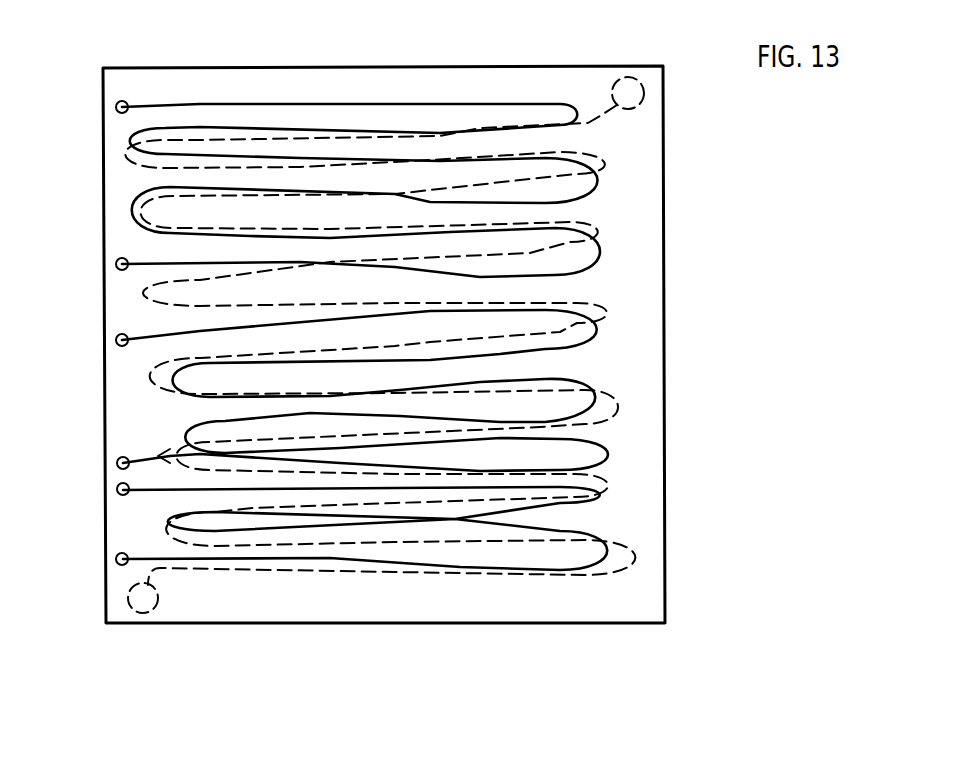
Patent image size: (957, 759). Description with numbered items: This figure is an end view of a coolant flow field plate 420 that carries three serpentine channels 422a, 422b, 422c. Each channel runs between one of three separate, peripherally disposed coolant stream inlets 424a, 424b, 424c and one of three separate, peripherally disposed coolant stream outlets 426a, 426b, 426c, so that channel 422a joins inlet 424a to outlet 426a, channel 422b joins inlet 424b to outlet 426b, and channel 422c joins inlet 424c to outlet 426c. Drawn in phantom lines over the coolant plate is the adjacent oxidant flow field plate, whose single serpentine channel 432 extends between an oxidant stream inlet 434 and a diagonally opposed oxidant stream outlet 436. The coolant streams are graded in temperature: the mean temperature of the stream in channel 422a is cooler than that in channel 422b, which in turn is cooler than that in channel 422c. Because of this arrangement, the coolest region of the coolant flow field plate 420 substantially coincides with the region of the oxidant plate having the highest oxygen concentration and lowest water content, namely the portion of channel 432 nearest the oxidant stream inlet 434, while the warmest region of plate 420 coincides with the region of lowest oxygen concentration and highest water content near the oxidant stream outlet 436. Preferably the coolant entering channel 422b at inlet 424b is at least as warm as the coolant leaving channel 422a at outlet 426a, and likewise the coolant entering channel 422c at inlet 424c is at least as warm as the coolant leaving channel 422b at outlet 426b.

The coolant flow field plate 420 is at (560, 629).
The serpentine channel 422a is at (238, 102).
The serpentine channel 422b is at (572, 320).
The serpentine channel 422c is at (572, 531).
The coolant stream inlet 424a is at (127, 102).
The coolant stream inlet 424b is at (116, 345).
The coolant stream inlet 424c is at (119, 495).
The coolant stream outlet 426a is at (116, 268).
The coolant stream outlet 426b is at (118, 468).
The coolant stream outlet 426c is at (117, 565).
The serpentine channel 432 is at (612, 170).
The oxidant stream inlet 434 is at (617, 76).
The oxidant stream outlet 436 is at (137, 629).